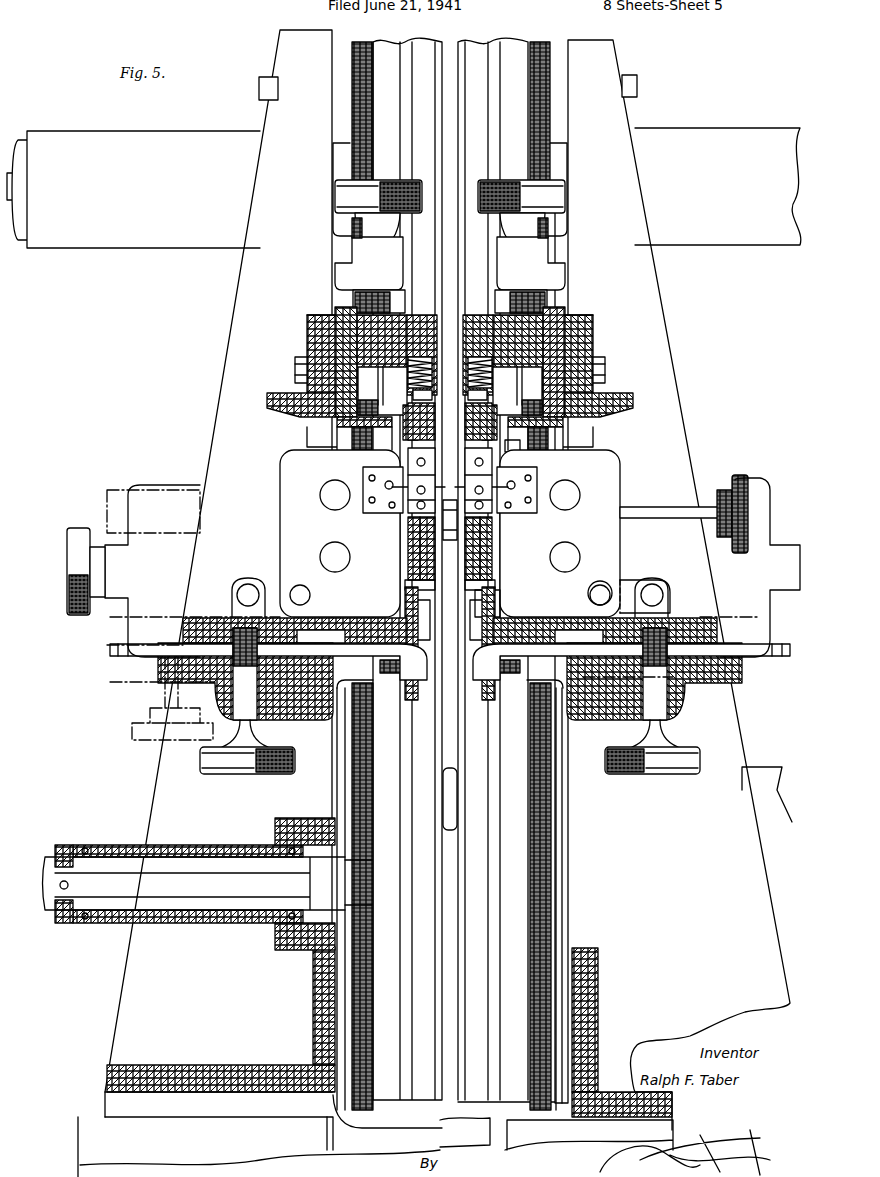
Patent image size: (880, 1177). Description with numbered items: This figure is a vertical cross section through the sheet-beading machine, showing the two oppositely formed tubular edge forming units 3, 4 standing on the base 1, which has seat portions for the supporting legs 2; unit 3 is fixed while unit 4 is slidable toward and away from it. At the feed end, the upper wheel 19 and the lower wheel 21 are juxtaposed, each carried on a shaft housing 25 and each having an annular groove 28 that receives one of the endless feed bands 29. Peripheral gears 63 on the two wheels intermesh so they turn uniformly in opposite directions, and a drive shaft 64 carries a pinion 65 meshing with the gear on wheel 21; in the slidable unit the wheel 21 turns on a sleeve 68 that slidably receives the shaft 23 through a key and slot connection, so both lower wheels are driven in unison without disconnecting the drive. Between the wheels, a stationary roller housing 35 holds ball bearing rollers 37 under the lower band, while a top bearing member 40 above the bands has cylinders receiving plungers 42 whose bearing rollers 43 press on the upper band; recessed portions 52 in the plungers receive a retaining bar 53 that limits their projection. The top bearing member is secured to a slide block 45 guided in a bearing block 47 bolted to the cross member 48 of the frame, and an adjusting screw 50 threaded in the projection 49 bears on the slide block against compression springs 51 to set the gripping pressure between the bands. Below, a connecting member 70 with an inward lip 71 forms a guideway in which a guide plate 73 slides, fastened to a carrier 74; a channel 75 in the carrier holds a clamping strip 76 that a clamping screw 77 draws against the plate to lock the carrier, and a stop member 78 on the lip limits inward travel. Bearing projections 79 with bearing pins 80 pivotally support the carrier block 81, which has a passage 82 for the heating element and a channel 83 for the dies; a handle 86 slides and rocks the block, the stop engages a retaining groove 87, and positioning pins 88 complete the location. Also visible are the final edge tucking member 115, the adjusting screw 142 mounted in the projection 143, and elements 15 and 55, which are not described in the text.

The base 1 is at (120, 1105).
The supporting legs 2 is at (95, 1148).
The tubular edge forming unit 3 is at (280, 42).
The tubular edge forming unit 4 is at (620, 45).
The bottom plate 15 is at (248, 1072).
The wheel 19 is at (378, 92).
The wheel 21 is at (320, 975).
The shaft 23 is at (760, 768).
The shaft housing 25 is at (110, 148).
The annular groove 28 is at (480, 55).
The endless feed bands 29 is at (585, 1092).
The roller housing 35 is at (490, 553).
The ball bearing rollers 37 is at (410, 540).
The top bearing member 40 is at (335, 333).
The plungers 42 is at (480, 375).
The bearing rollers 43 is at (510, 485).
The slide block 45 is at (340, 352).
The bearing block 47 is at (355, 300).
The cross member 48 is at (320, 318).
The projection 49 is at (368, 258).
The adjusting screw 50 is at (355, 197).
The compression springs 51 is at (310, 405).
The recessed portions 52 is at (345, 432).
The retaining bar 53 is at (360, 450).
The pin 55 is at (525, 446).
The gears 63 is at (362, 42).
The drive shaft 64 is at (180, 890).
The pinion 65 is at (365, 895).
The sleeve 68 is at (175, 848).
The connecting member 70 is at (308, 715).
The lip 71 is at (385, 700).
The guide plate 73 is at (130, 656).
The carrier 74 is at (258, 590).
The channel 75 is at (330, 630).
The clamping strip 76 is at (730, 602).
The clamping screw 77 is at (235, 765).
The stop member 78 is at (415, 680).
The bearing projections 79 is at (635, 580).
The bearing pins 80 is at (600, 580).
The carrier block 81 is at (285, 472).
The passage 82 is at (330, 550).
The channel 83 is at (510, 520).
The handle 86 is at (738, 478).
The retaining groove 87 is at (505, 582).
The positioning pins 88 is at (505, 612).
The final edge tucking member 115 is at (368, 512).
The adjusting screw 142 is at (70, 595).
The projection 143 is at (770, 545).